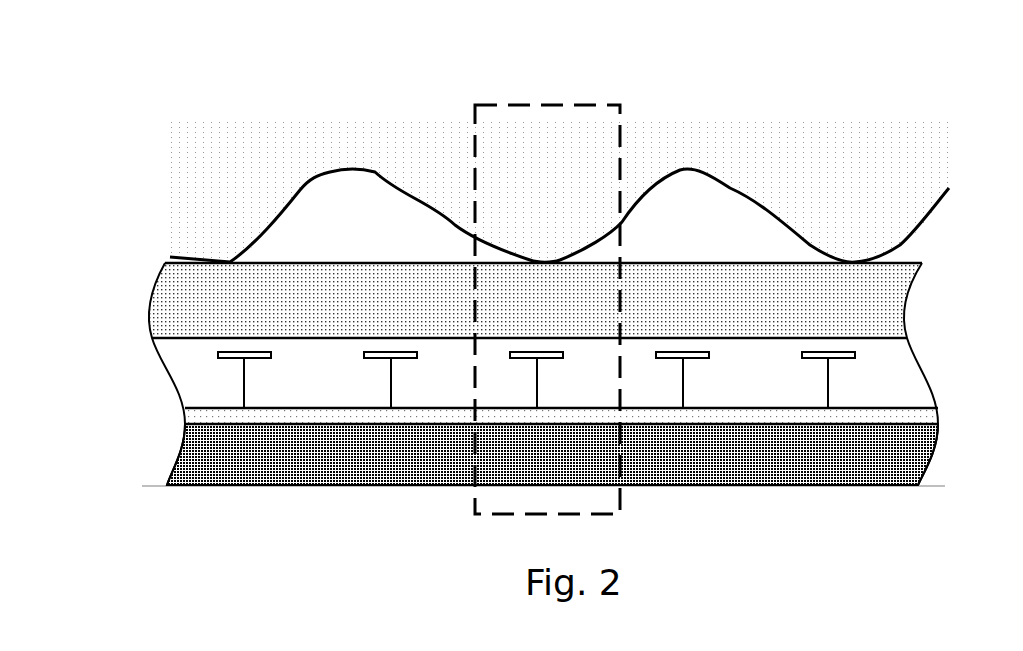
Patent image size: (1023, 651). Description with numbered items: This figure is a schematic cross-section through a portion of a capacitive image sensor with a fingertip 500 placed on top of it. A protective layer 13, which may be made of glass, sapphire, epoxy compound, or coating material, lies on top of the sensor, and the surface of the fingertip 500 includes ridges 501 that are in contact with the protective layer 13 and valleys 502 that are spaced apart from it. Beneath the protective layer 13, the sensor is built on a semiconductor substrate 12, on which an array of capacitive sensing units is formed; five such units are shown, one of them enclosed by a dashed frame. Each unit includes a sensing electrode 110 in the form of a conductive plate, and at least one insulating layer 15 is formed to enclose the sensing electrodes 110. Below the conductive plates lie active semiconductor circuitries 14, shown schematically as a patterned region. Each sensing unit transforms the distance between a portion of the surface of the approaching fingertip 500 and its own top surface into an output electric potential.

The semiconductor substrate 12 is at (175, 470).
The protective layer 13 is at (197, 307).
The active semiconductor circuitries 14 is at (203, 413).
The insulating layer 15 is at (190, 374).
The sensing electrode 110 is at (218, 355).
The fingertip 500 is at (284, 138).
The ridges 501 is at (544, 261).
The valleys 502 is at (700, 173).